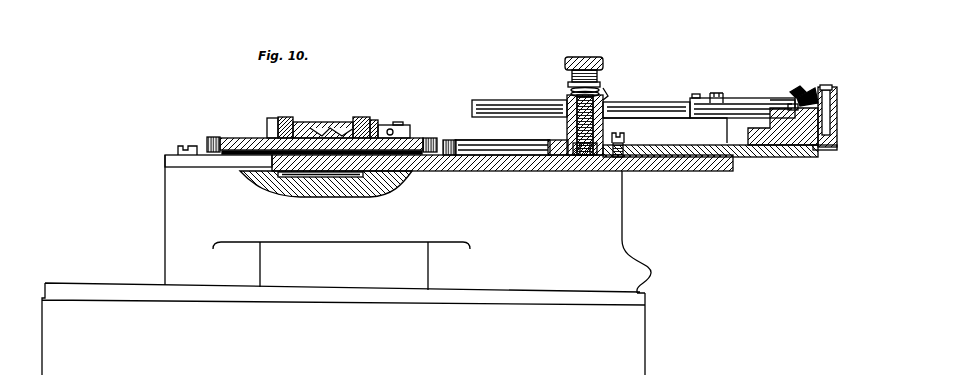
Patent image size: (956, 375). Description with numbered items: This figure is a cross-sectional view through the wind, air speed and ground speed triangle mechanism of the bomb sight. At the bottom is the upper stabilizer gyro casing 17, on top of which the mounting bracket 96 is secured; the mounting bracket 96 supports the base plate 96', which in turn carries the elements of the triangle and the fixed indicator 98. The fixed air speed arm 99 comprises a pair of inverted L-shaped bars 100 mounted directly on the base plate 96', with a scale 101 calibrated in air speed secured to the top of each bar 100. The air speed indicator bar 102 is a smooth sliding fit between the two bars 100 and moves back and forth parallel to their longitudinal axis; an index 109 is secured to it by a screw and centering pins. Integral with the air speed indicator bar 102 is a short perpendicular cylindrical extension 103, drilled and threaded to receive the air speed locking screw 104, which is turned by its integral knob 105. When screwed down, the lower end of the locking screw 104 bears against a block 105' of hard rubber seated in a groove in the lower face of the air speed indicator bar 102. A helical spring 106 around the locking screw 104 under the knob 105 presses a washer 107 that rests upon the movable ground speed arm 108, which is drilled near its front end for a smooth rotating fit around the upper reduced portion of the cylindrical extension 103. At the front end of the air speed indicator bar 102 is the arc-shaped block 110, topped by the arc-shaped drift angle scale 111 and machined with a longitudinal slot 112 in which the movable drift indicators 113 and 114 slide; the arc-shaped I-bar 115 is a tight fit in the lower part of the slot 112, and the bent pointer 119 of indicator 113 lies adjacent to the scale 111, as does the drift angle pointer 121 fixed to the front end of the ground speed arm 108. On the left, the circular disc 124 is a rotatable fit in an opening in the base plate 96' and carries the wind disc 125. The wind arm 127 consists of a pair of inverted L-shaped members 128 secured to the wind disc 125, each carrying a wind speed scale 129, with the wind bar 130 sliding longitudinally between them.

The upper stabilizer gyro casing 17 is at (543, 349).
The mounting bracket 96 is at (346, 265).
The base plate 96' is at (449, 177).
The fixed indicator 98 is at (431, 138).
The fixed air speed arm 99 is at (472, 143).
The inverted L-shaped bars 100 is at (455, 144).
The scale 101 is at (508, 142).
The air speed indicator bar 102 is at (683, 148).
The cylindrical extension 103 is at (569, 122).
The air speed locking screw 104 is at (604, 92).
The knob 105 is at (591, 54).
The block of hard rubber 105' is at (581, 177).
The helical spring 106 is at (572, 84).
The washer 107 is at (571, 93).
The movable ground speed arm 108 is at (657, 102).
The index 109 is at (627, 141).
The arc-shaped block 110 is at (783, 133).
The arc-shaped drift angle scale 111 is at (792, 106).
The longitudinal slot 112 is at (827, 150).
The movable drift indicator 113 is at (828, 87).
The movable drift indicator 114 is at (813, 88).
The arc-shaped I-bar 115 is at (818, 151).
The bent pointer 119 is at (797, 90).
The drift angle pointer 121 is at (748, 98).
The circular disc 124 is at (325, 178).
The wind disc 125 is at (210, 137).
The wind arm 127 is at (268, 121).
The inverted L-shaped parallel members 128 is at (272, 132).
The scale 129 is at (285, 117).
The wind bar 130 is at (312, 122).